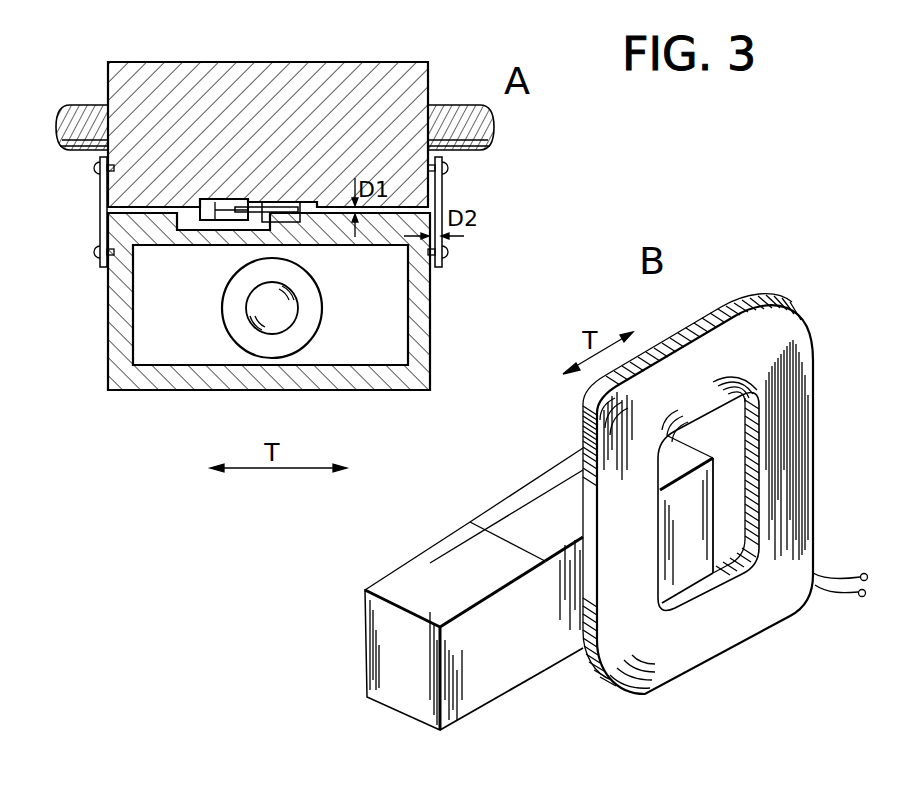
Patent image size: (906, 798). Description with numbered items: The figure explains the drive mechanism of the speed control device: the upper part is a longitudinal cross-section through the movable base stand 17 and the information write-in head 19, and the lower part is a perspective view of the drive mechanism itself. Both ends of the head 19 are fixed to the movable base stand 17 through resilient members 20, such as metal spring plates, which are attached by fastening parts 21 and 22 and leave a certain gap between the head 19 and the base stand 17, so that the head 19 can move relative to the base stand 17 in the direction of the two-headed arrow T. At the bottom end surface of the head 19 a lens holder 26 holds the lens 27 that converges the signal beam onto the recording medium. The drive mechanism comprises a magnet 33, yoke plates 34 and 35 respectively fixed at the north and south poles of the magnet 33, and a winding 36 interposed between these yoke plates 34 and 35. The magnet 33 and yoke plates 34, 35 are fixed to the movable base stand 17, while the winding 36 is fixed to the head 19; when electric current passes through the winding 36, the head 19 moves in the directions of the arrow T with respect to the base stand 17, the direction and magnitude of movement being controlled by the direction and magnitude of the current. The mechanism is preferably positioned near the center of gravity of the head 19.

In FIG. 3A, the movable base stand 17 is at (234, 72).
In FIG. 3A, the information write-in head 19 is at (298, 377).
In FIG. 3A, the resilient members 20 is at (100, 215).
In FIG. 3A, the screw 21 is at (100, 175).
In FIG. 3A, the screw head 22 is at (100, 168).
In FIG. 3A, the lens holder 26 is at (308, 327).
In FIG. 3A, the lens 27 is at (285, 310).
In FIG. 3A, the magnet 33 is at (205, 222).
In FIG. 3B, the magnet 33 is at (385, 658).
In FIG. 3A, the yoke plate 34 is at (240, 222).
In FIG. 3B, the yoke plate 34 is at (492, 662).
In FIG. 3A, the yoke plate 35 is at (224, 222).
In FIG. 3B, the yoke plate 35 is at (468, 537).
In FIG. 3A, the winding 36 is at (283, 225).
In FIG. 3B, the winding 36 is at (692, 643).